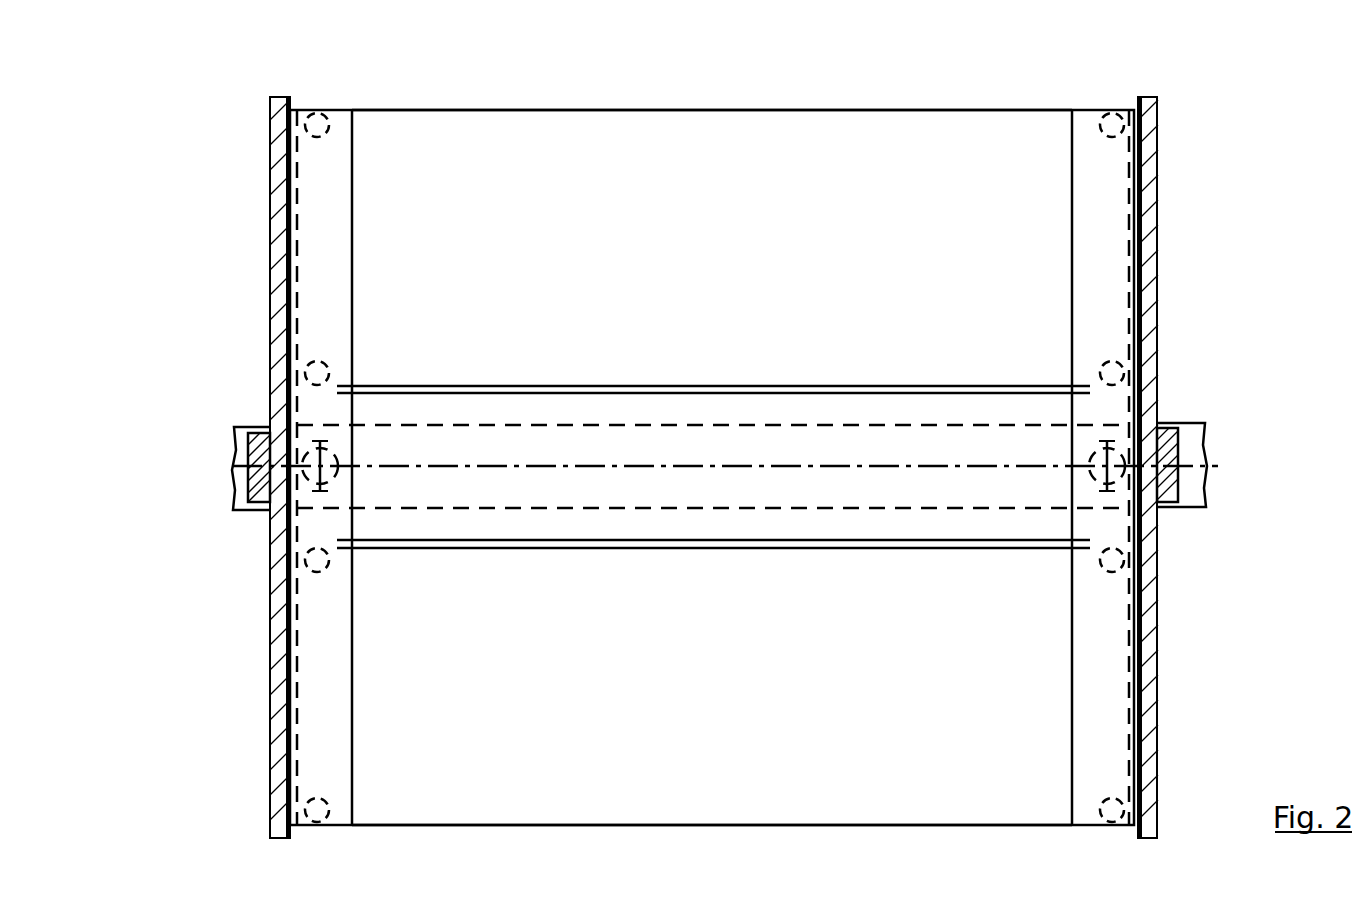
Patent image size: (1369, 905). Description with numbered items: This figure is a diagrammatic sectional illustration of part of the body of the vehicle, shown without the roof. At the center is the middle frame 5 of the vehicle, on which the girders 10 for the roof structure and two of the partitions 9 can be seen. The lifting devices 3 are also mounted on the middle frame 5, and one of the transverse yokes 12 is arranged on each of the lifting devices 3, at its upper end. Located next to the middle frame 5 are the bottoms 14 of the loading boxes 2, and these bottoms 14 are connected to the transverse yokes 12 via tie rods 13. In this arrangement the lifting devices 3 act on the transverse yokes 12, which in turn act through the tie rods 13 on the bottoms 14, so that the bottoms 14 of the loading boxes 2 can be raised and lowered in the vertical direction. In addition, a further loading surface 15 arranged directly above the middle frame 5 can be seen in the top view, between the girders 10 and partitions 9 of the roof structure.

The loading box 2 is at (637, 259).
The lifting device 3 is at (312, 460).
The middle frame 5 is at (1195, 487).
The partition 9 is at (285, 672).
The girder 10 is at (1173, 442).
The transverse yoke 12 is at (332, 173).
The tie rod 13 is at (322, 113).
The bottom 14 is at (553, 192).
The loading surface 15 is at (375, 402).